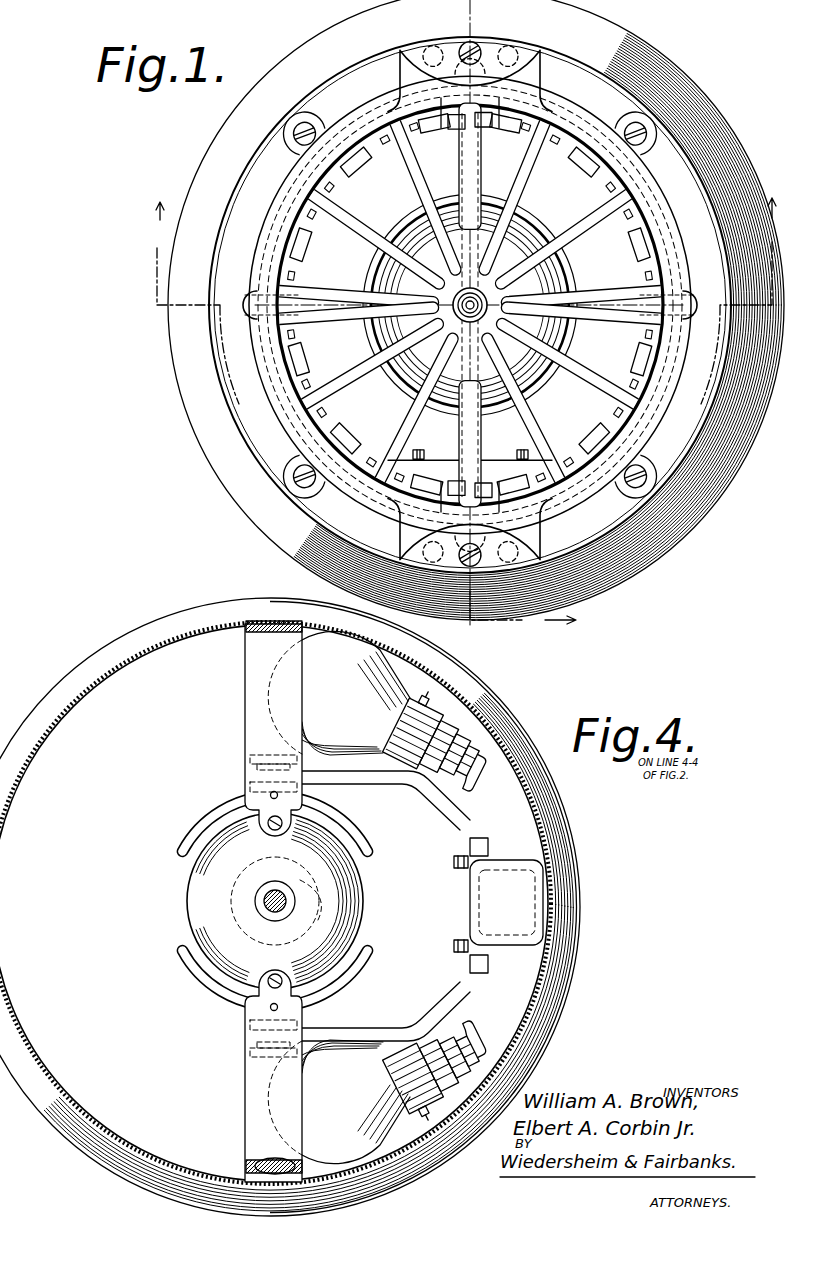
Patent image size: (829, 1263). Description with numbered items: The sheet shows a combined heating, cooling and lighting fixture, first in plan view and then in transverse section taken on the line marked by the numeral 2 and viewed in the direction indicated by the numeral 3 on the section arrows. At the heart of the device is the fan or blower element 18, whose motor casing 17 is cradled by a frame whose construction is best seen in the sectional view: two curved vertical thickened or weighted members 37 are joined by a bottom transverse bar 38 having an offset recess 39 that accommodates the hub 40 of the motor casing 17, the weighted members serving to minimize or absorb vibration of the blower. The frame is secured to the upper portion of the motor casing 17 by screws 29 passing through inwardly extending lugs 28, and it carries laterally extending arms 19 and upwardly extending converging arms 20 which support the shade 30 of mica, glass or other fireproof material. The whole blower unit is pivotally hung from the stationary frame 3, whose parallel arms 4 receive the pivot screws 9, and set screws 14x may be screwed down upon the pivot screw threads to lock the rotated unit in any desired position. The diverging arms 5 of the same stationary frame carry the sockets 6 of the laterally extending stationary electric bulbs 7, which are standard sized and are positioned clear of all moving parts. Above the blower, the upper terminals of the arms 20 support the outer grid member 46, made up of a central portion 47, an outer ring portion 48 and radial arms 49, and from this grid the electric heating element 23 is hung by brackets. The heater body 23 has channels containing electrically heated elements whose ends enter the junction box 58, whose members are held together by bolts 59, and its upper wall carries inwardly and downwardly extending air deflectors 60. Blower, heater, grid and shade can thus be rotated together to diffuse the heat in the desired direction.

In FIG. 1, the section line 2- 2 is at (463, 301).
In FIG. 1, the frame 3 is at (523, 611).
In FIG. 4, the frame 3 is at (478, 870).
In FIG. 4, the parallel arms 4 is at (348, 785).
In FIG. 4, the outwardly projecting or diverging arms 5 is at (456, 848).
In FIG. 4, the socket 6 is at (497, 730).
In FIG. 4, the electric bulb or lamp 7 is at (430, 1180).
In FIG. 4, the pivot screw 9 is at (250, 760).
In FIG. 4, the set screw 14x is at (226, 1052).
In FIG. 4, the motor casing 17 is at (352, 875).
In FIG. 1, the fan or blower element 18 is at (245, 293).
In FIG. 1, the laterally extending arms 19 is at (489, 150).
In FIG. 4, the laterally extending arms 19 is at (253, 695).
In FIG. 4, the upwardly extending converging arms 20 is at (292, 620).
In FIG. 1, the electric heating element 23 is at (636, 357).
In FIG. 4, the inwardly extending lugs 28 is at (268, 822).
In FIG. 4, the screws 29 is at (275, 908).
In FIG. 1, the shade 30 is at (722, 437).
In FIG. 4, the shade 30 is at (548, 832).
In FIG. 1, the curved vertical thickened or weighted members 37 is at (404, 222).
In FIG. 4, the curved vertical thickened or weighted members 37 is at (186, 948).
In FIG. 4, the bottom transverse bar 38 is at (345, 912).
In FIG. 4, the offset recess 39 is at (321, 882).
In FIG. 4, the hub 40 is at (263, 905).
In FIG. 1, the outer grid member 46 is at (581, 274).
In FIG. 1, the central portion 47 is at (480, 298).
In FIG. 1, the outer ring portion 48 is at (364, 128).
In FIG. 1, the radial arms 49 is at (540, 216).
In FIG. 1, the junction box 58 is at (470, 476).
In FIG. 1, the bolts 59 is at (436, 441).
In FIG. 1, the air deflectors 60 is at (304, 341).